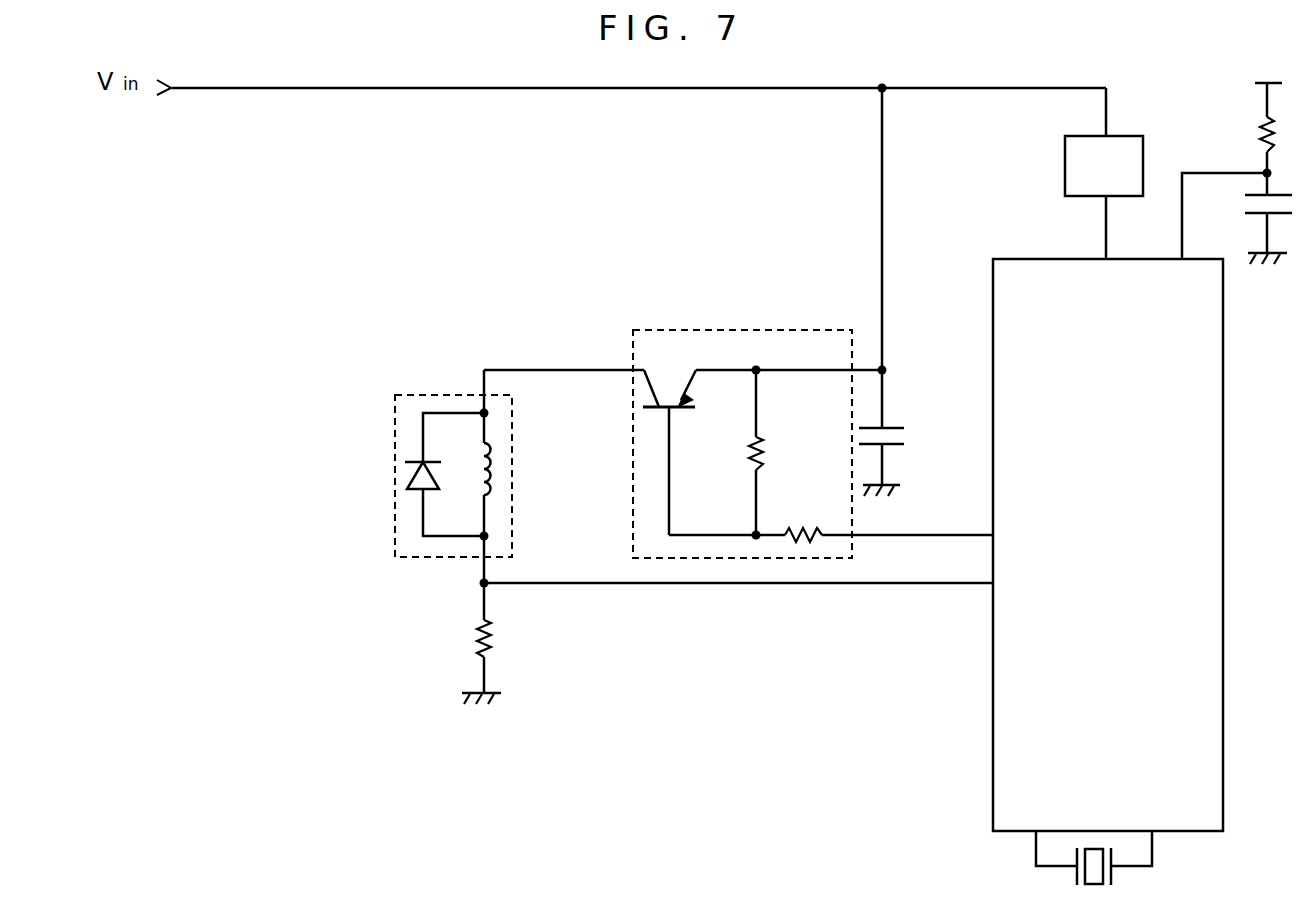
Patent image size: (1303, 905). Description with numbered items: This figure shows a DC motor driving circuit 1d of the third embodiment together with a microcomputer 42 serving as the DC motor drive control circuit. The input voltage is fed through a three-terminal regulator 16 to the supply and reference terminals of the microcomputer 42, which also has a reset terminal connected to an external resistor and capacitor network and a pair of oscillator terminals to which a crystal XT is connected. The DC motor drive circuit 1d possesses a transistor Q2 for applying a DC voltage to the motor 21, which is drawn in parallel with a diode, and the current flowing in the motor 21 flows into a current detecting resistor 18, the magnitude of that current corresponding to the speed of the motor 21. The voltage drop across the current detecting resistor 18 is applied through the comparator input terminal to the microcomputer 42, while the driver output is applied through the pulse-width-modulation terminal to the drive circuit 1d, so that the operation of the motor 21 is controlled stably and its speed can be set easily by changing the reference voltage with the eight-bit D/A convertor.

The three-terminal regulator 16 is at (1128, 186).
The microcomputer 42 is at (1137, 460).
The DC motor driving circuit 1d is at (738, 404).
The transistor Q2 is at (732, 458).
The motor 21 is at (434, 396).
The current detecting resistor 18 is at (497, 639).
The crystal oscillator XT is at (1073, 877).